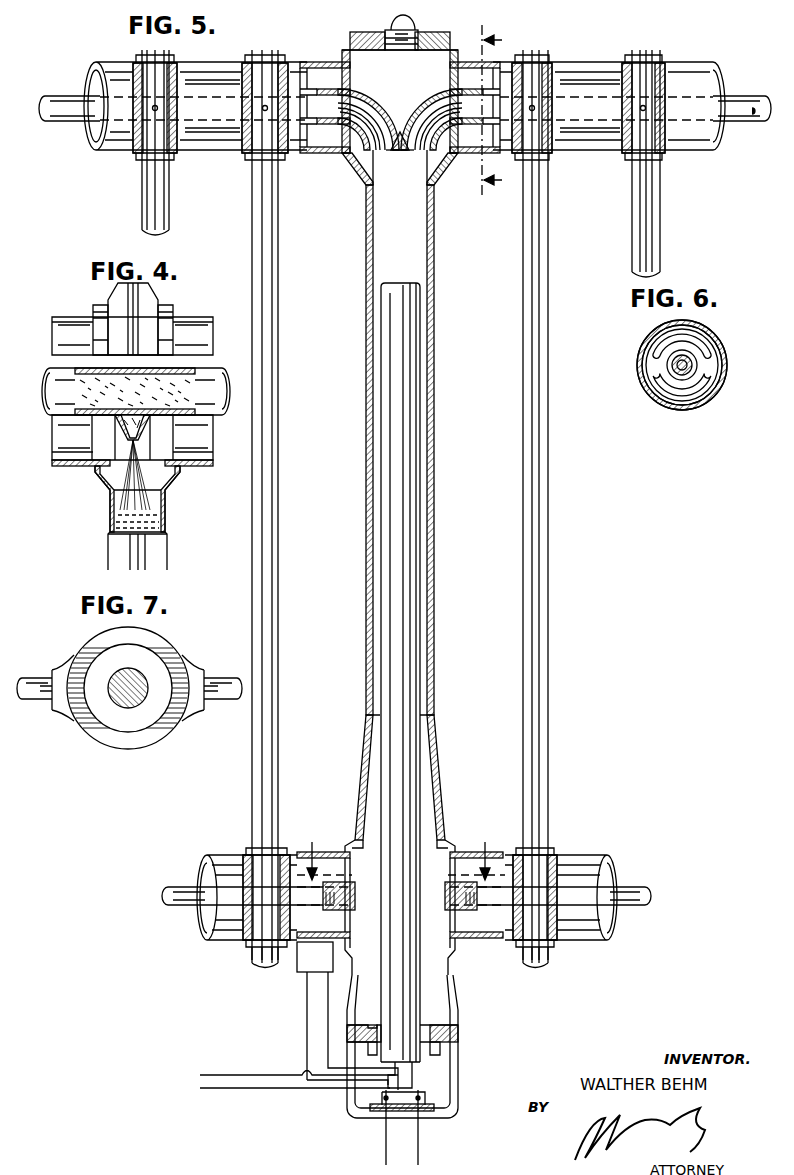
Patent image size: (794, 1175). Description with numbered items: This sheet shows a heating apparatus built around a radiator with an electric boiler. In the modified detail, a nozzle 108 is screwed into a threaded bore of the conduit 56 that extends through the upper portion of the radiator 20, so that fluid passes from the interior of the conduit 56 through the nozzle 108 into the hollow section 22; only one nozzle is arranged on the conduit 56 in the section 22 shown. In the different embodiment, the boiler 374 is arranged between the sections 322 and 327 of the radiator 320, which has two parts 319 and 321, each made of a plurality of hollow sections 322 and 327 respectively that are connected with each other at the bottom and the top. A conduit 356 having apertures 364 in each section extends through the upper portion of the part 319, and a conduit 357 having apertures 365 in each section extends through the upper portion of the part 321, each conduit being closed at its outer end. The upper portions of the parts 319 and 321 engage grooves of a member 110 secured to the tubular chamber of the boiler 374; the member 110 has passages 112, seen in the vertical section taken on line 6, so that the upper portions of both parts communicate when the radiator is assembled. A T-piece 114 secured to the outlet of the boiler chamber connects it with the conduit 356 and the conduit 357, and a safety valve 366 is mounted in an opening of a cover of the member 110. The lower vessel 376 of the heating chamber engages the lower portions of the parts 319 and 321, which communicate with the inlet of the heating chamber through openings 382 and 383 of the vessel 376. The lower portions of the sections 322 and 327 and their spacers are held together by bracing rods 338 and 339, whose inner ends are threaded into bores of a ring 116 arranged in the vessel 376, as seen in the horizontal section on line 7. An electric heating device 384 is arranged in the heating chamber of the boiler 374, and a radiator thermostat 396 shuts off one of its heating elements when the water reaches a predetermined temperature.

In FIG. 4, the radiator 20 is at (80, 315).
In FIG. 4, the conduit 56 is at (205, 378).
In FIG. 4, the nozzle 108 is at (118, 435).
In FIG. 4, the section 22 is at (160, 494).
In FIG. 5, the conduit 356 is at (68, 104).
In FIG. 5, the part of the radiator 319 is at (222, 60).
In FIG. 5, the apertures 364 is at (158, 106).
In FIG. 5, the radiator 320 is at (306, 60).
In FIG. 5, the safety valve 366 is at (408, 20).
In FIG. 5, the member 110 is at (444, 186).
In FIG. 6, the member 110 is at (652, 370).
In FIG. 5, the passages 112 is at (348, 80).
In FIG. 6, the passages 112 is at (665, 340).
In FIG. 5, the T-piece 114 is at (400, 126).
In FIG. 5, the section line 6— 6 is at (496, 111).
In FIG. 5, the part of the radiator 321 is at (590, 60).
In FIG. 6, the part of the radiator 321 is at (722, 333).
In FIG. 5, the conduit 357 is at (732, 100).
In FIG. 5, the apertures 365 is at (536, 107).
In FIG. 5, the hollow sections 322 is at (170, 185).
In FIG. 5, the hollow sections 327 is at (661, 199).
In FIG. 5, the boiler 374 is at (440, 452).
In FIG. 5, the electric heating device 384 is at (408, 608).
In FIG. 7, the electric heating device 384 is at (126, 702).
In FIG. 5, the opening 382 is at (350, 856).
In FIG. 5, the opening 383 is at (460, 858).
In FIG. 5, the section line 7— 7 is at (401, 853).
In FIG. 5, the ring 116 is at (348, 888).
In FIG. 7, the ring 116 is at (136, 748).
In FIG. 5, the bracing rod 338 is at (184, 906).
In FIG. 7, the bracing rod 338 is at (34, 700).
In FIG. 5, the bracing rod 339 is at (620, 893).
In FIG. 7, the bracing rod 339 is at (222, 700).
In FIG. 5, the radiator thermostat 396 is at (305, 967).
In FIG. 5, the lower vessel 376 is at (452, 978).